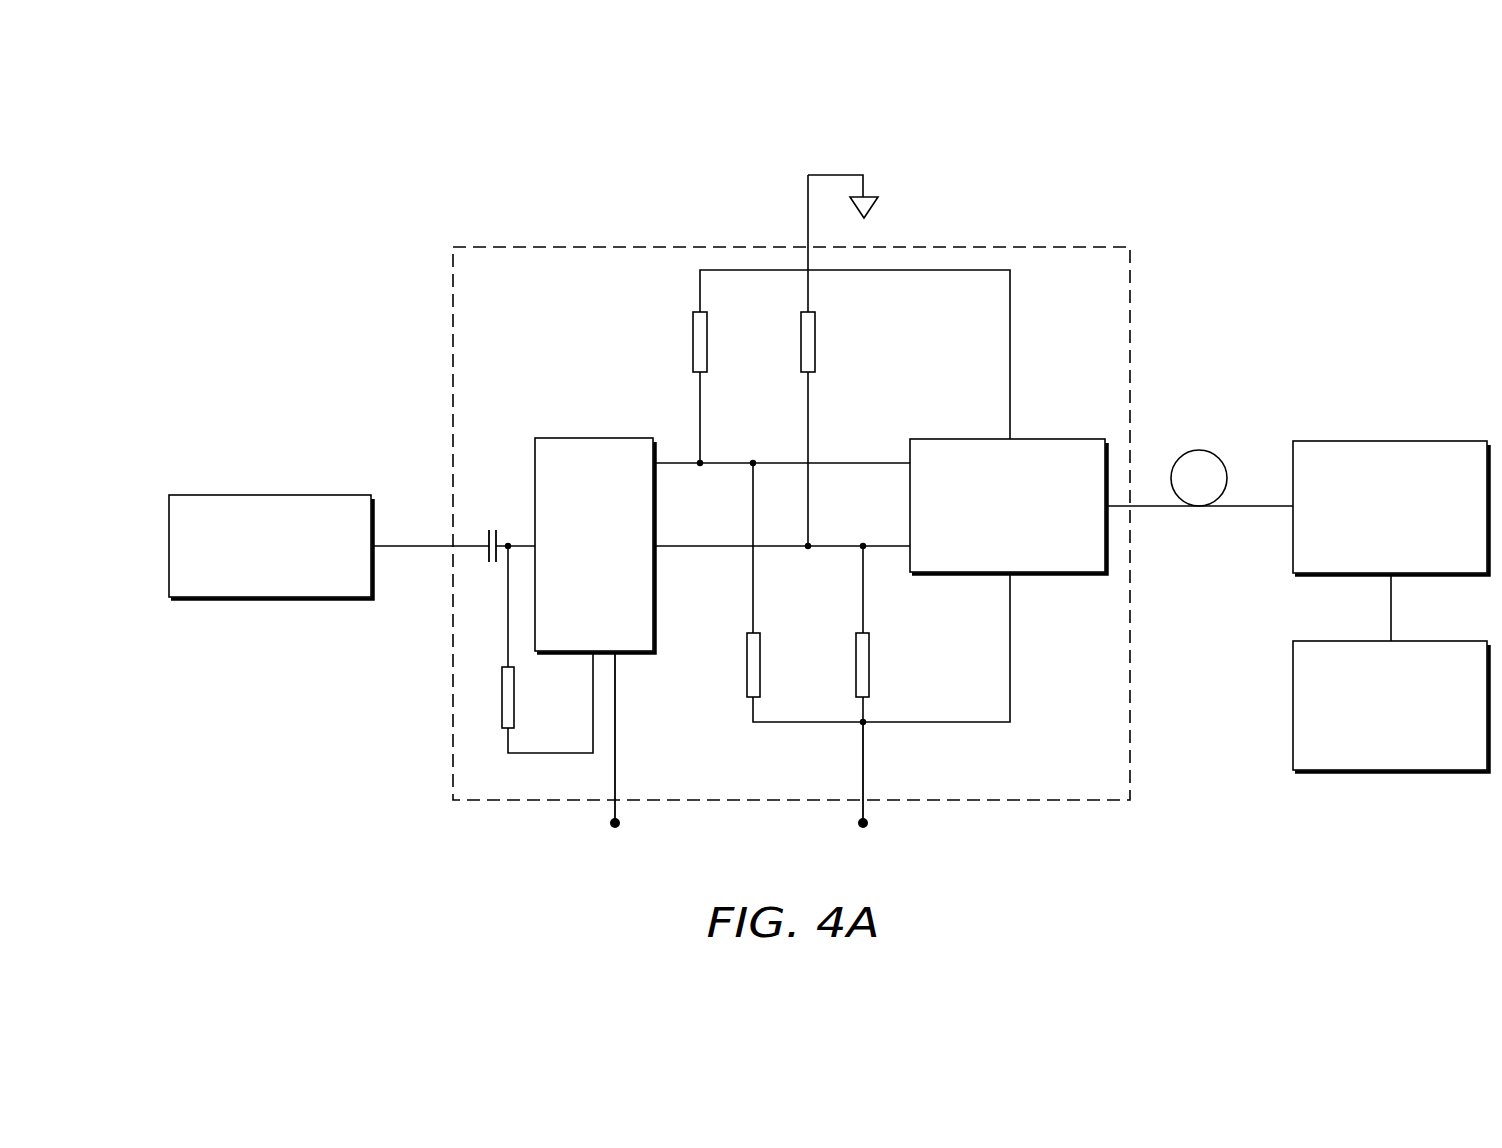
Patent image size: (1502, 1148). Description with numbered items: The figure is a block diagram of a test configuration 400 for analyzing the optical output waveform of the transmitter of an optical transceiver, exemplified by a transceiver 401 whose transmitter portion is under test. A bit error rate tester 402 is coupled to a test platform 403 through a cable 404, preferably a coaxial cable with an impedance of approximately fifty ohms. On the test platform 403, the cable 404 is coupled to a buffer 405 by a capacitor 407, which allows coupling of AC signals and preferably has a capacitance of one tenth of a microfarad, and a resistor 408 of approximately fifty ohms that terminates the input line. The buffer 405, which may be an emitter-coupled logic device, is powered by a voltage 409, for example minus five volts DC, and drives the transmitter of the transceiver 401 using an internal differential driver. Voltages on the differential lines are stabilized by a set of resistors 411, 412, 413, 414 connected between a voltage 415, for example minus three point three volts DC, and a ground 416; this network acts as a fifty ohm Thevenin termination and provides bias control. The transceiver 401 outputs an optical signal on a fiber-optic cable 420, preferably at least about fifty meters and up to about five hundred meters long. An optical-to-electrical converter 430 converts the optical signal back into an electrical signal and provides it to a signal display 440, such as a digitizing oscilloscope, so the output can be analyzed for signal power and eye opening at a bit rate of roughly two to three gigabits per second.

The test configuration 400 is at (348, 196).
The transceiver 401 is at (963, 438).
The bit error rate tester 402 is at (266, 494).
The test platform 403 is at (539, 246).
The cable 404 is at (421, 549).
The buffer 405 is at (592, 438).
The capacitor 407 is at (492, 529).
The resistor 408 is at (514, 708).
The voltage 409 is at (612, 831).
The resistor 411 is at (693, 342).
The resistor 412 is at (747, 672).
The resistor 413 is at (800, 338).
The resistor 414 is at (857, 650).
The voltage 415 is at (856, 830).
The ground 416 is at (873, 206).
The fiber-optic cable 420 is at (1205, 450).
The optical-to-electrical converter 430 is at (1425, 440).
The signal display 440 is at (1422, 640).